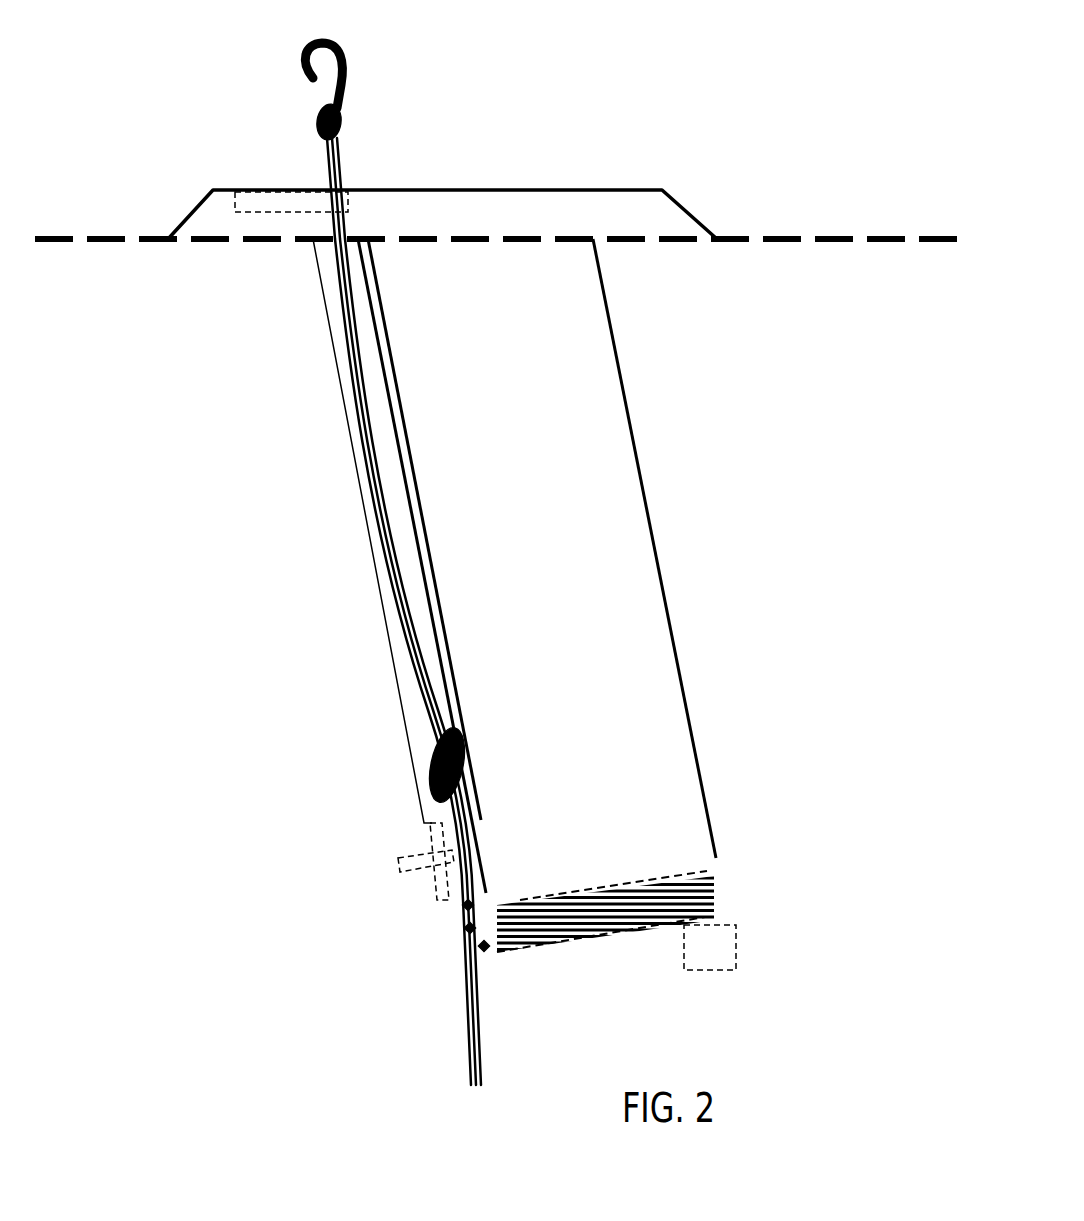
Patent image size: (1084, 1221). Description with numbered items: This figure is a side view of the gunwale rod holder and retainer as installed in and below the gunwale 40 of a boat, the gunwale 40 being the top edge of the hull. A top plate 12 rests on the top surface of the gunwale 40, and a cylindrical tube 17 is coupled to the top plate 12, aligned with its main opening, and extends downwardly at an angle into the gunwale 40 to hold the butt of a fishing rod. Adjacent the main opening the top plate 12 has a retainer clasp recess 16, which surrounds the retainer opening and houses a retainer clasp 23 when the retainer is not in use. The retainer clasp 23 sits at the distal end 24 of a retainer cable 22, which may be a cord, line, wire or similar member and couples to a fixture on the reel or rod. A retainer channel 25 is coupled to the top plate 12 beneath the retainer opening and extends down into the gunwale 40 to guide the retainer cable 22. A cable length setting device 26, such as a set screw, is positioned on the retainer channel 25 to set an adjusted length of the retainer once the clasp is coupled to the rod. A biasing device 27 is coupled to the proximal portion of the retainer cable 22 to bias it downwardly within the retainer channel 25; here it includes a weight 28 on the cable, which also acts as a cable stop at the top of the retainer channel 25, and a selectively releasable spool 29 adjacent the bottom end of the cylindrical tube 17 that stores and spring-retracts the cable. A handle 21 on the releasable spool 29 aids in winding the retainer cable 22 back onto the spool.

The top plate 12 is at (672, 213).
The retainer clasp recess 16 is at (252, 196).
The cylindrical tube 17 is at (652, 522).
The handle 21 is at (707, 936).
The retainer cable 22 is at (335, 298).
The retainer clasp 23 is at (342, 75).
The distal end 24 is at (345, 160).
The retainer channel 25 is at (335, 368).
The cable length setting device 26 is at (400, 875).
The biasing device 27 is at (300, 770).
The weight 28 is at (432, 765).
The releasable spool 29 is at (712, 878).
The gunwale 40 is at (875, 247).